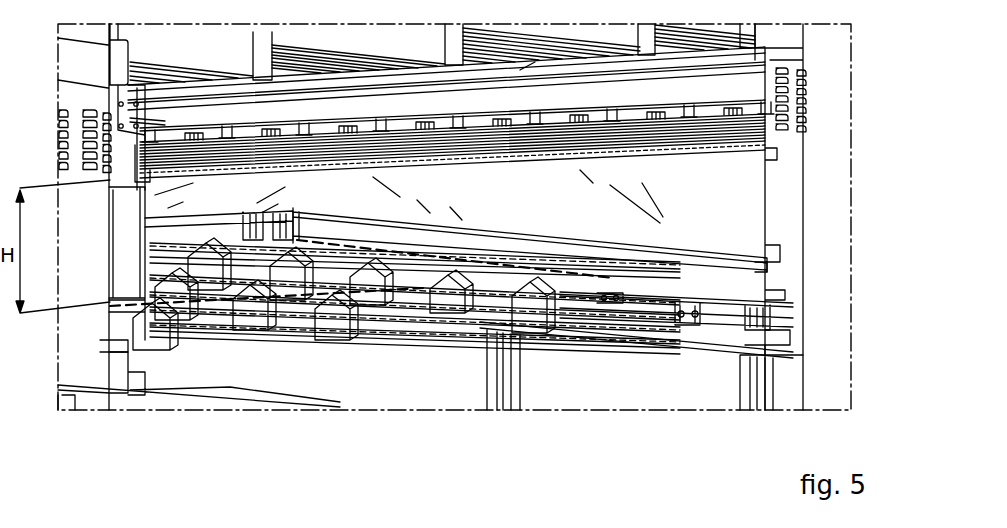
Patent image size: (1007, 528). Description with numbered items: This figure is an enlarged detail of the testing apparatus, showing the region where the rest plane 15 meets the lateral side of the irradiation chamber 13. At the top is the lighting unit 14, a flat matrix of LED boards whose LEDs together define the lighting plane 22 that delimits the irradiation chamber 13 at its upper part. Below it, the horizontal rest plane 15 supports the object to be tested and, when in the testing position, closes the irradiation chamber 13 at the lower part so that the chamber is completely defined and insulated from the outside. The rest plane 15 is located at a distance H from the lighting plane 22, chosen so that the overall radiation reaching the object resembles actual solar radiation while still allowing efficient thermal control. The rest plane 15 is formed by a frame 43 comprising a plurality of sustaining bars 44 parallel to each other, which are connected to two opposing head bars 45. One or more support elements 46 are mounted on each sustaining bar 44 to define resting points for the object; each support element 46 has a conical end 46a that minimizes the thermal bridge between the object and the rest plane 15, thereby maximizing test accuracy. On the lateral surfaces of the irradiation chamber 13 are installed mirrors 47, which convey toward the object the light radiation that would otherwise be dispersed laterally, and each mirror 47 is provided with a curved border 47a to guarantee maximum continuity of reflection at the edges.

The irradiation chamber 13 is at (742, 192).
The lighting unit 14 is at (677, 164).
The rest plane 15 is at (496, 258).
The lighting plane 22 is at (573, 160).
The frame 43 is at (744, 293).
The sustaining bars 44 is at (336, 320).
The head bars 45 is at (805, 330).
The support elements 46 is at (177, 347).
The conical end 46a is at (170, 343).
The mirrors 47 is at (118, 153).
The curved border 47a is at (102, 345).